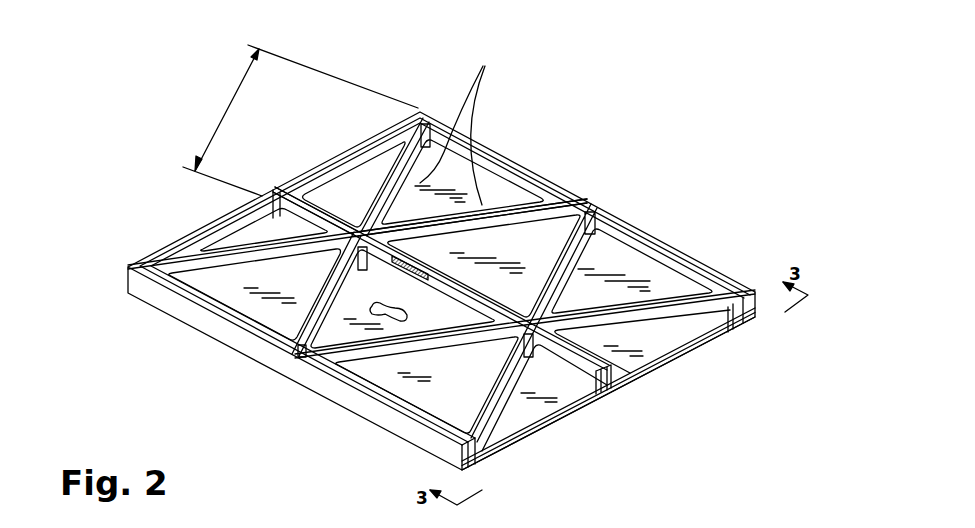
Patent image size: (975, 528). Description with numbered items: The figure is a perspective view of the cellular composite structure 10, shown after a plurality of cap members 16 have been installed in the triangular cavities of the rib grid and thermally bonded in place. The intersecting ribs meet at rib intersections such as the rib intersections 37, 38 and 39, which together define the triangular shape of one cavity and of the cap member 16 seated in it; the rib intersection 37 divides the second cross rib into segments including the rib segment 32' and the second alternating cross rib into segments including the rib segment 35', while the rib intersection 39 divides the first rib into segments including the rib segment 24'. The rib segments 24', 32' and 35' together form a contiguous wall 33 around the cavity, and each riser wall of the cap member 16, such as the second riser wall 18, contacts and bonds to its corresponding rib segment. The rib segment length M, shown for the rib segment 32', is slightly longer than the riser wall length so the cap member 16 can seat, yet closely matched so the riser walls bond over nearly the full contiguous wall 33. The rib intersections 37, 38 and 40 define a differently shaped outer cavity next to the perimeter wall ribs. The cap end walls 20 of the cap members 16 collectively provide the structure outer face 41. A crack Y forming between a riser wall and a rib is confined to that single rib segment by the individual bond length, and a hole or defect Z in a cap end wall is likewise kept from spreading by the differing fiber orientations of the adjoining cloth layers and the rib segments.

The cellular composite structure 10 is at (618, 150).
The cap member 16 is at (440, 157).
The second riser wall 18 is at (601, 392).
The cap end wall 20 is at (530, 412).
The rib segment 24' is at (447, 256).
The rib segment 32' is at (381, 165).
The contiguous wall 33 is at (457, 123).
The rib segment 35' is at (472, 171).
The rib intersection 37 is at (337, 190).
The rib intersection 38 is at (419, 110).
The rib intersection 39 is at (596, 206).
The rib intersection 40 is at (277, 192).
The structure outer face 41 is at (675, 358).
The rib segment length M is at (300, 120).
The crack Y is at (392, 263).
The hole or defect Z is at (370, 313).